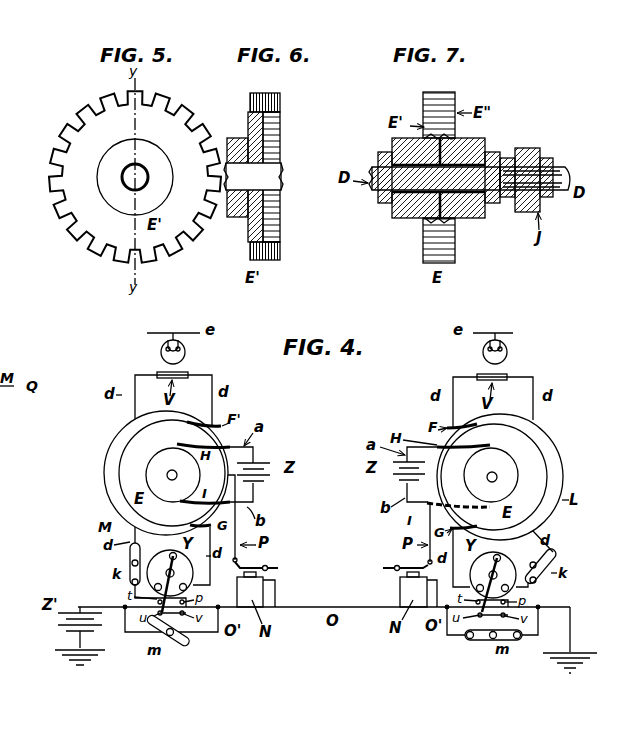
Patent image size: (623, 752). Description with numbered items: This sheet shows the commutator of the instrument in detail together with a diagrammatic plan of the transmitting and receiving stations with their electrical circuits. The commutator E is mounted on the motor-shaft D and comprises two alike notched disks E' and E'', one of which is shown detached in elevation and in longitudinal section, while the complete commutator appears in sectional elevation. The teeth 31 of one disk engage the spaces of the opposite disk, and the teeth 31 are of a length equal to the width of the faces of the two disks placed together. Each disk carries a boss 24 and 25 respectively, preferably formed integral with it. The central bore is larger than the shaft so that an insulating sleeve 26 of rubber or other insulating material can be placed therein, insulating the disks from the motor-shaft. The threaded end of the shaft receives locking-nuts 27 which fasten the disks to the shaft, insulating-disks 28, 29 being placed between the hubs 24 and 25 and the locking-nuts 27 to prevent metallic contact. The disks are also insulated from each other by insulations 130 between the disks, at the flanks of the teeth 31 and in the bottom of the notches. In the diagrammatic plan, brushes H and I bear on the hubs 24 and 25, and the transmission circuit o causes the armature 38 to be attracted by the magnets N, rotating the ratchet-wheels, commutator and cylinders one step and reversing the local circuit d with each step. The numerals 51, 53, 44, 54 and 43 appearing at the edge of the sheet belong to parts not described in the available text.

In FIG. 5, the boss 24 is at (135, 177).
In FIG. 6, the boss 24 is at (235, 218).
In FIG. 7, the boss 24 is at (405, 219).
In FIG. 4, the boss 24 is at (173, 475).
In FIG. 5, the insulating sleeve 26 is at (150, 177).
In FIG. 6, the insulating sleeve 26 is at (264, 177).
In FIG. 7, the insulating sleeve 26 is at (475, 143).
In FIG. 5, the teeth 31 is at (72, 125).
In FIG. 6, the teeth 31 is at (282, 102).
In FIG. 5, the insulations 130 is at (88, 116).
In FIG. 6, the insulations 130 is at (266, 197).
In FIG. 7, the insulations 130 is at (443, 160).
In FIG. 7, the locking-nuts 27 is at (374, 155).
In FIG. 7, the boss 25 is at (469, 219).
In FIG. 7, the insulating-disk 28 is at (390, 210).
In FIG. 7, the insulating-disk 29 is at (488, 210).
In FIG. 4, the part (cut off) 51 is at (0, 405).
In FIG. 4, the part (cut off) 53 is at (0, 462).
In FIG. 4, the part (cut off) 44 is at (0, 467).
In FIG. 4, the part (cut off) 54 is at (0, 472).
In FIG. 4, the part (cut off) 43 is at (0, 496).
In FIG. 4, the armature 38 is at (8, 533).